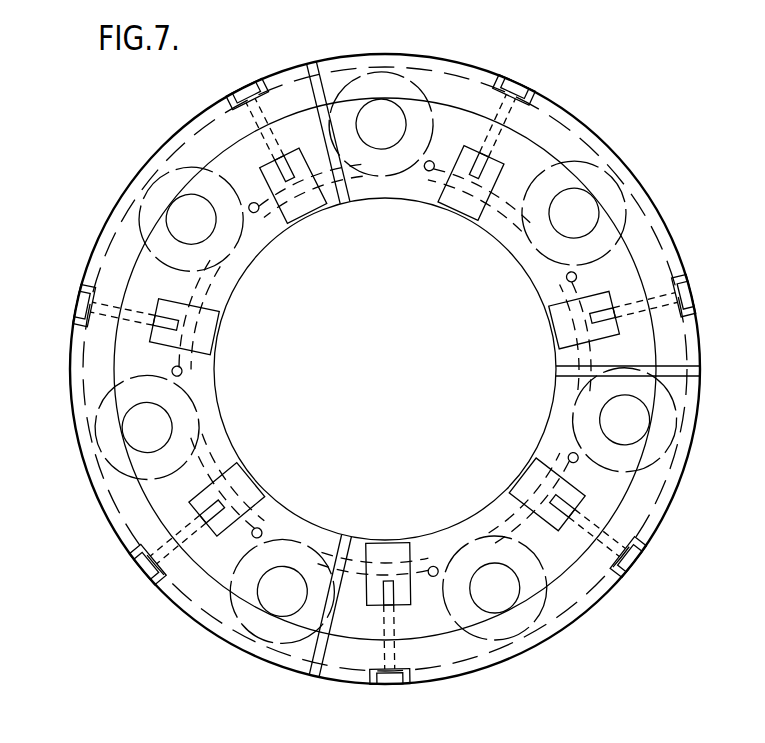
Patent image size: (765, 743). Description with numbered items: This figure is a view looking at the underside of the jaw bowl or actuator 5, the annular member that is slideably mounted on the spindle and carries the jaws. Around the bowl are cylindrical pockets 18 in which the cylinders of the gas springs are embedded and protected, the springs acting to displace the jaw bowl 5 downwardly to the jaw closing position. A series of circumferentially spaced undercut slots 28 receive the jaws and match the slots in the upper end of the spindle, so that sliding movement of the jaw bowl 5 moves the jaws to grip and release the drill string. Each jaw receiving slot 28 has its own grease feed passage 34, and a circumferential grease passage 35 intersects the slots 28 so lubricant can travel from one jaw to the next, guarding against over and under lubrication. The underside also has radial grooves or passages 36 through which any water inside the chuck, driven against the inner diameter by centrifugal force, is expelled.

The jaw bowl or actuator 5 is at (664, 186).
The cylindrical pockets 18 is at (155, 180).
The undercut slots 28 is at (293, 222).
The grease feed passages 34 is at (543, 110).
The circumferential grease passage 35 is at (233, 447).
The radial grooves or passages 36 is at (702, 367).